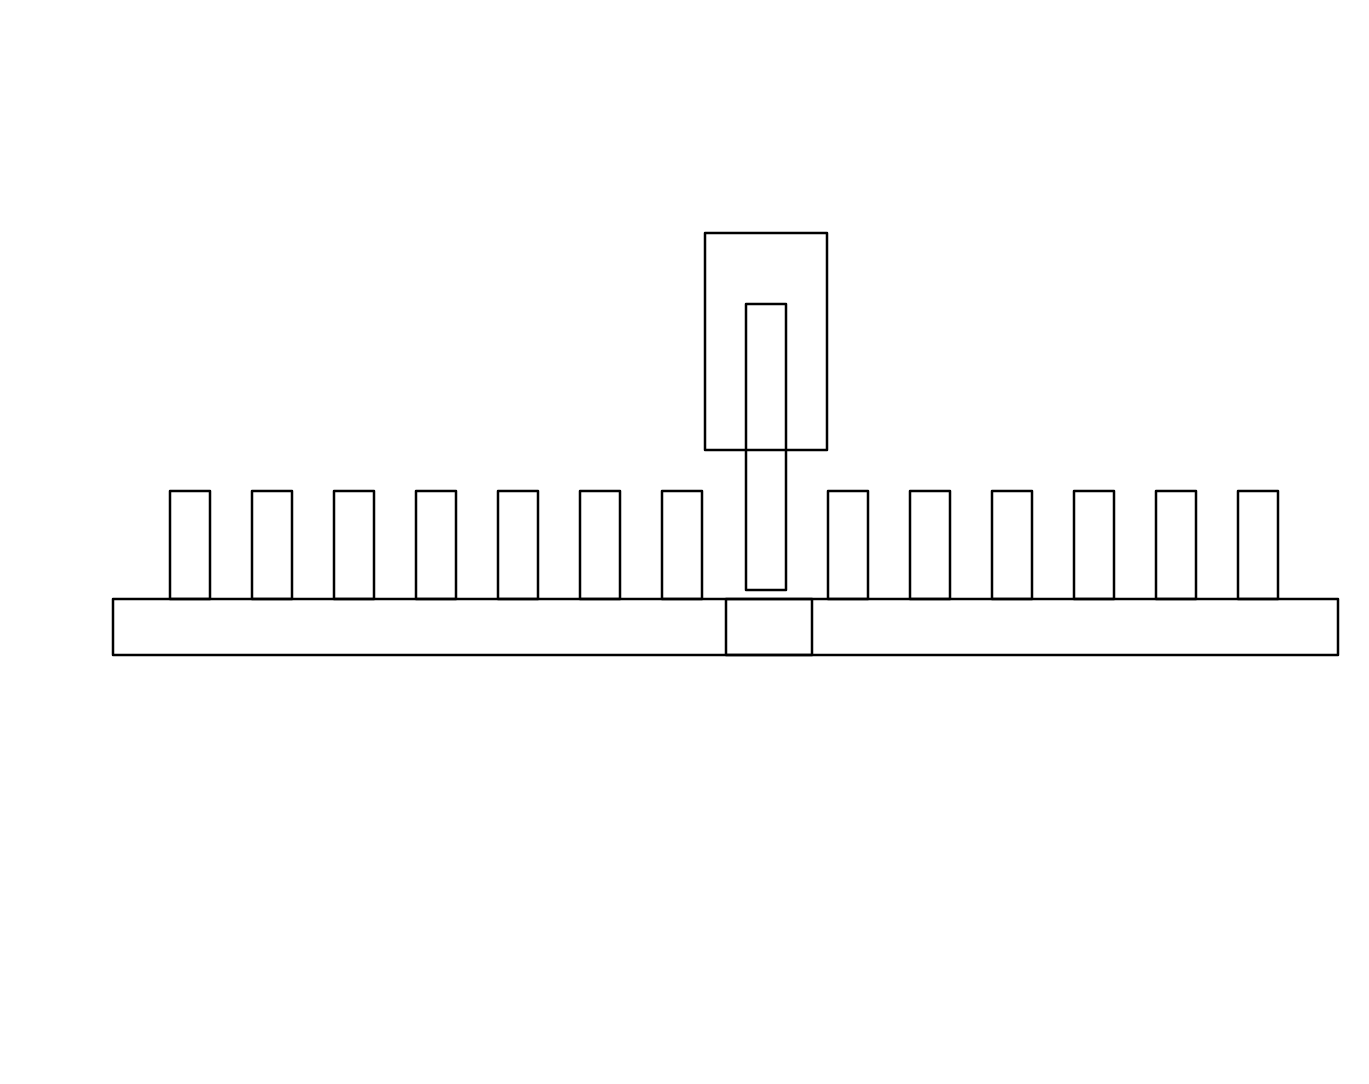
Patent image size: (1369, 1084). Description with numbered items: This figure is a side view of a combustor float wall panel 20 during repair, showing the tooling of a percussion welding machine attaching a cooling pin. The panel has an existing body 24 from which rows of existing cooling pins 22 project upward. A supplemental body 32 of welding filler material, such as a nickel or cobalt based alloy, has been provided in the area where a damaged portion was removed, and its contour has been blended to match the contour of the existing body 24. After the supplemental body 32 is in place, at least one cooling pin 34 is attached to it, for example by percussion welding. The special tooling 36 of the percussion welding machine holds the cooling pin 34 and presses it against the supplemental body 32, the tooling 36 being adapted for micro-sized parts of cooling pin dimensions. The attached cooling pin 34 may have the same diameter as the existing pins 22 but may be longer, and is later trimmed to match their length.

The combustor float wall panel 20 is at (1245, 162).
The existing cooling pins 22 is at (190, 491).
The body 24 is at (312, 643).
The supplemental body 32 is at (779, 627).
The cooling pin 34 is at (770, 385).
The special tooling 36 is at (827, 263).